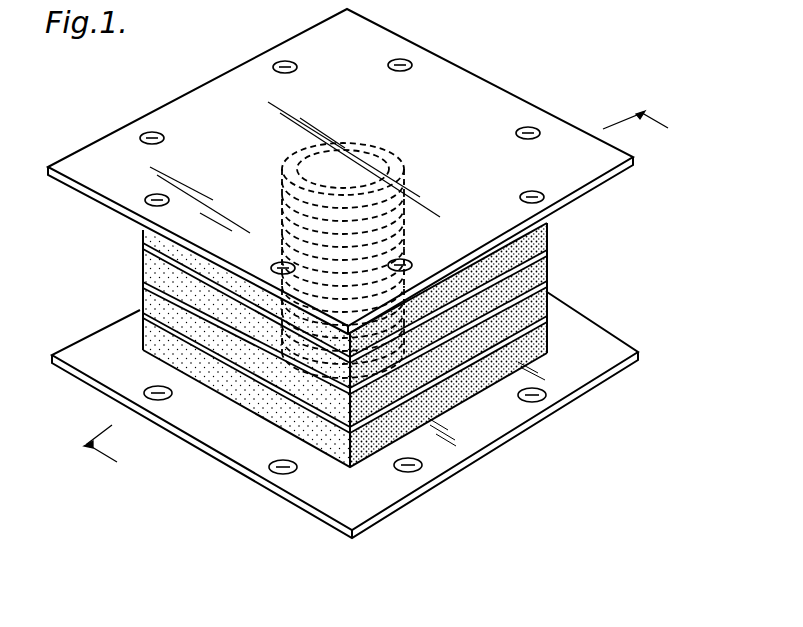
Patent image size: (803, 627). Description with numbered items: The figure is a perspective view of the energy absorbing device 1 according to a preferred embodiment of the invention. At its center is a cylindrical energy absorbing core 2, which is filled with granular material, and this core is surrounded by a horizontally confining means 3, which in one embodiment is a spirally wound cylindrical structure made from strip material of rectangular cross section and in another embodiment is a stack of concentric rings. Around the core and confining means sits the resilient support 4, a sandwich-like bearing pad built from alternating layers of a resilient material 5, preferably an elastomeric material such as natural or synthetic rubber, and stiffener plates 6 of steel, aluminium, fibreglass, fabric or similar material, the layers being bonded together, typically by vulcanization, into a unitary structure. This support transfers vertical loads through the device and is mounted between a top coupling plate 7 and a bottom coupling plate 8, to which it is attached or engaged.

The vibration isolator bearing 1 is at (513, 82).
The central energy absorbing core 2 is at (325, 172).
The horizontally confining means 3 is at (404, 175).
The resilient support 4 is at (378, 345).
The resilient material layers 5 is at (548, 252).
The stiffener plates 6 is at (547, 278).
The top coupling plate 7 is at (634, 153).
The bottom coupling plate 8 is at (623, 347).